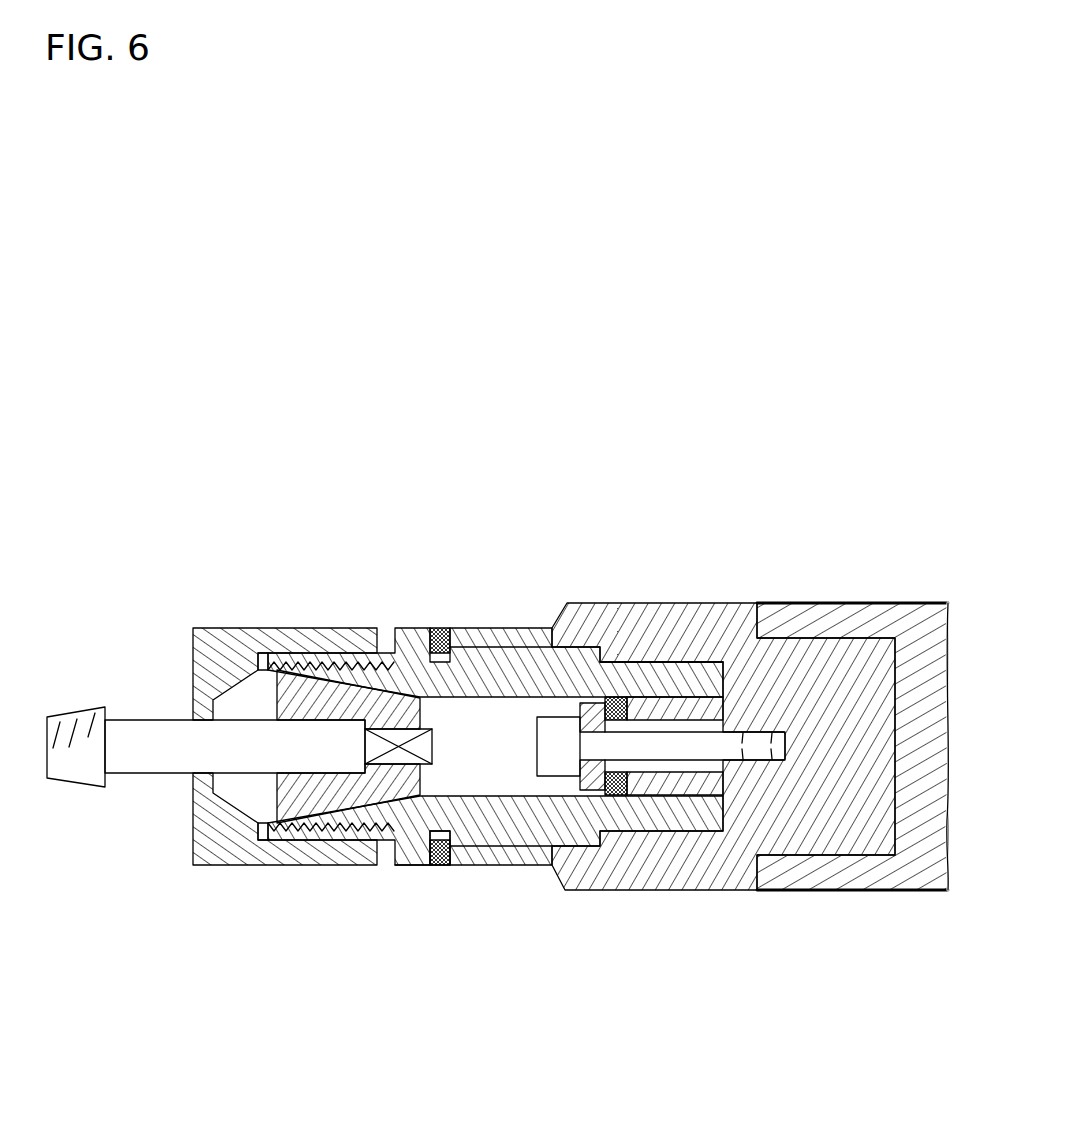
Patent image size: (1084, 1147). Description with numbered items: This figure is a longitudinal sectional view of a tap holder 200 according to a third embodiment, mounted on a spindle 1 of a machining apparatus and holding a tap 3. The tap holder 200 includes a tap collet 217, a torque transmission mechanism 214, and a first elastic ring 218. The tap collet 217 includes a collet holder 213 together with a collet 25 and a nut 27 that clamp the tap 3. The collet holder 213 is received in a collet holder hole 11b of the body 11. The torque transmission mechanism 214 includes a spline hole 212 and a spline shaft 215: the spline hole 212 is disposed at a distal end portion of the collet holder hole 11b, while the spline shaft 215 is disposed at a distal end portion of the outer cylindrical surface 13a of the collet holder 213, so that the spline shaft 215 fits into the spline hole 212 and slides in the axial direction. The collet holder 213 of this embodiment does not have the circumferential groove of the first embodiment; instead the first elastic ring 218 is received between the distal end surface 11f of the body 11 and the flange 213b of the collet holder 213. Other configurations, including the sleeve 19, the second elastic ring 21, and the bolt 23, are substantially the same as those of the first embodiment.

The spindle 1 is at (858, 603).
The tap 3 is at (86, 706).
The body 11 is at (723, 740).
The collet holder hole 11b is at (699, 822).
The distal end surface 11f is at (443, 864).
The outer cylindrical surface 13a is at (670, 660).
The sleeve 19 is at (599, 791).
The second elastic ring 21 is at (621, 796).
The bolt 23 is at (546, 778).
The collet 25 is at (308, 628).
The nut 27 is at (225, 628).
The tap holder 200 is at (500, 702).
The spline hole 212 is at (458, 628).
The collet holder 213 is at (495, 740).
The flange 213b is at (412, 866).
The torque transmission mechanism 214 is at (496, 558).
The spline shaft 215 is at (530, 628).
The tap collet 217 is at (306, 664).
The first elastic ring 218 is at (436, 866).